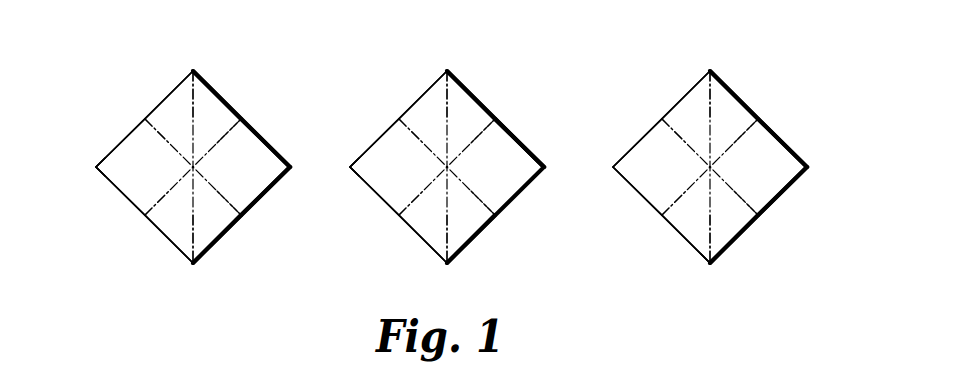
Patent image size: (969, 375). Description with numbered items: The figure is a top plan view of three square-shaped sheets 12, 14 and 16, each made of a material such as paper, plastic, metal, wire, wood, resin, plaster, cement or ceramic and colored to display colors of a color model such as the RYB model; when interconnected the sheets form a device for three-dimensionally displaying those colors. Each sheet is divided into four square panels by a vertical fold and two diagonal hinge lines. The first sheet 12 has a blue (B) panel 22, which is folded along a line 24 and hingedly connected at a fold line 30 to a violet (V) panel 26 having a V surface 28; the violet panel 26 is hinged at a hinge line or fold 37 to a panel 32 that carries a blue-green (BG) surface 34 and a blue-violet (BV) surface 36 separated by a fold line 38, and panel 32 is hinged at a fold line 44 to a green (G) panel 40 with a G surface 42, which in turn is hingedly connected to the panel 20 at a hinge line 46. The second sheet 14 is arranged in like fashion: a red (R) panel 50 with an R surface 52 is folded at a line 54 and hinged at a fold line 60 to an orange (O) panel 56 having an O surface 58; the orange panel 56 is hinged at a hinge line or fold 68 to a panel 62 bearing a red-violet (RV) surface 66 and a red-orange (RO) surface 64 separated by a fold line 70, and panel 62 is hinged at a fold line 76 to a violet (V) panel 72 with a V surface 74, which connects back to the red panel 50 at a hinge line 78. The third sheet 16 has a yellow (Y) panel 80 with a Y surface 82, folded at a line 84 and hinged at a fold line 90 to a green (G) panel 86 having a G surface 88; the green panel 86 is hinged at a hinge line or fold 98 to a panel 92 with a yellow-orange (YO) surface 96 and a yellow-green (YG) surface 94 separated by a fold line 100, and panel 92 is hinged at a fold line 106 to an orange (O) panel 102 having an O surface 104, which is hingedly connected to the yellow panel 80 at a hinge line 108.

The square sheet 12 is at (238, 96).
The square sheet 14 is at (492, 96).
The square sheet 16 is at (765, 102).
The panel 20 is at (218, 93).
The blue (B) panel 22 is at (174, 92).
The fold line 24 is at (201, 84).
The violet (V) panel 26 is at (272, 190).
The V surface 28 is at (263, 157).
The fold line 30 is at (233, 133).
The panel 32 is at (173, 247).
The blue-green (BG) surface 34 is at (157, 217).
The blue-violet (BV) surface 36 is at (213, 240).
The hinge line or fold 37 is at (224, 230).
The fold line 38 is at (183, 247).
The green (G) panel 40 is at (100, 165).
The G surface 42 is at (135, 147).
The fold line 44 is at (157, 201).
The hinge line 46 is at (153, 126).
The red (R) panel 50 is at (428, 90).
The R surface 52 is at (472, 92).
The fold line 54 is at (457, 90).
The orange (O) panel 56 is at (521, 144).
The O surface 58 is at (507, 140).
The fold line 60 is at (486, 124).
The panel 62 is at (427, 247).
The red-orange (RO) surface 64 is at (453, 238).
The red-violet (RV) surface 66 is at (410, 217).
The hinge line or fold 68 is at (487, 211).
The fold line 70 is at (440, 244).
The violet (V) panel 72 is at (353, 165).
The V surface 74 is at (388, 147).
The fold line 76 is at (412, 202).
The hinge line 78 is at (408, 124).
The yellow (Y) panel 80 is at (700, 82).
The Y surface 82 is at (735, 108).
The fold line 84 is at (727, 83).
The green (G) panel 86 is at (790, 188).
The G surface 88 is at (782, 158).
The fold line 90 is at (753, 128).
The panel 92 is at (695, 253).
The yellow-green (YG) surface 94 is at (730, 235).
The yellow-orange (YO) surface 96 is at (693, 237).
The hinge line or fold 98 is at (743, 214).
The fold line 100 is at (727, 244).
The orange (O) panel 102 is at (635, 143).
The O surface 104 is at (652, 190).
The fold line 106 is at (677, 212).
The hinge line 108 is at (667, 125).